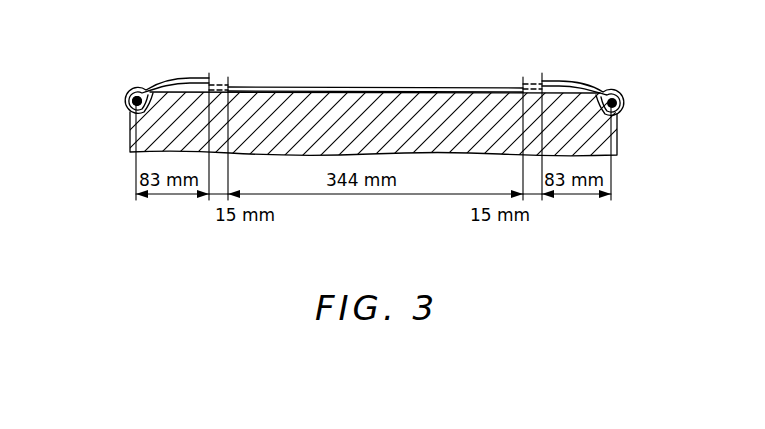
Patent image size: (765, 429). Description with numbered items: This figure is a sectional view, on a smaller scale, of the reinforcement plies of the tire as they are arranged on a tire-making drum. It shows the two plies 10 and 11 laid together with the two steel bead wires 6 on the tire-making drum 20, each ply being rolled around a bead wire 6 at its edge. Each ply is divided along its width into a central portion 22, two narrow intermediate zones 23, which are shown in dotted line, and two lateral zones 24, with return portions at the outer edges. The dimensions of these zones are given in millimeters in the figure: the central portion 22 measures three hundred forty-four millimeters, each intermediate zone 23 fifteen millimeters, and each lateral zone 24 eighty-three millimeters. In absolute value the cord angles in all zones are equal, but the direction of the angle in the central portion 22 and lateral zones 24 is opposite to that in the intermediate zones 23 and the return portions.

The steel bead wire 6 is at (136, 96).
The ply 10 is at (127, 89).
The ply 11 is at (124, 101).
The tire-making drum 20 is at (130, 129).
The central portion 22 is at (365, 196).
The narrow intermediate zone 23 is at (208, 200).
The lateral zone 24 is at (172, 194).